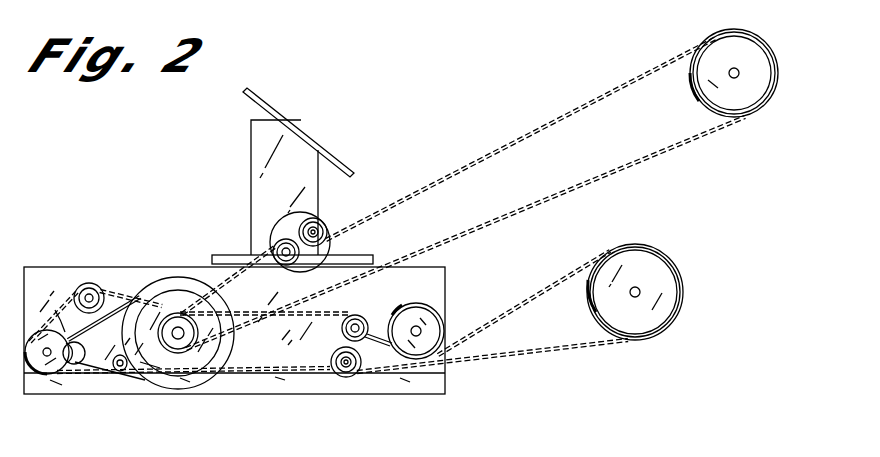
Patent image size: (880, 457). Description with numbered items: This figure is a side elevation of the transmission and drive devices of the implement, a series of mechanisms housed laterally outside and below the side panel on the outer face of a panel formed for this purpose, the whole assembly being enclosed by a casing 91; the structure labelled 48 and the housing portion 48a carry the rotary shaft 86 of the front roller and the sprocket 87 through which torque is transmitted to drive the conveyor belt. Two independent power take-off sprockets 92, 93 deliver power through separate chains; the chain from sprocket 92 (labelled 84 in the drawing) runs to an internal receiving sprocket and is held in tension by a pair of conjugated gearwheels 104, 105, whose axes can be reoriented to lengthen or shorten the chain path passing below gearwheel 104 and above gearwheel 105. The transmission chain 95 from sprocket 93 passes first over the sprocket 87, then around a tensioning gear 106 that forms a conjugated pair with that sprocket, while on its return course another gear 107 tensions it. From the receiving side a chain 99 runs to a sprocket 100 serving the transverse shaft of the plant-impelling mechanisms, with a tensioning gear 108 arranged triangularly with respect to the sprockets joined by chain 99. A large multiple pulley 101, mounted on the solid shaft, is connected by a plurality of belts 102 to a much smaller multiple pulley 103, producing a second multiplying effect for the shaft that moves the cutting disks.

The support column 48 is at (300, 135).
The housing 48a is at (440, 389).
The drive belt 84 is at (466, 165).
The rotary shaft 86 is at (124, 374).
The sprocket 87 is at (423, 311).
The casing 91 is at (224, 255).
The sprocket 92 is at (714, 40).
The sprocket 93 is at (668, 270).
The transmission chain 95 is at (553, 282).
The chain 99 is at (118, 290).
The sprocket 100 is at (49, 375).
The multiple pulley 101 is at (173, 278).
The belts 102 is at (55, 310).
The multiple pulley 103 is at (77, 366).
The gearwheel 104 is at (321, 220).
The conjugated gearwheel 105 is at (278, 263).
The tensioning gear 106 is at (360, 317).
The gear 107 is at (347, 377).
The tensioning gear 108 is at (89, 283).